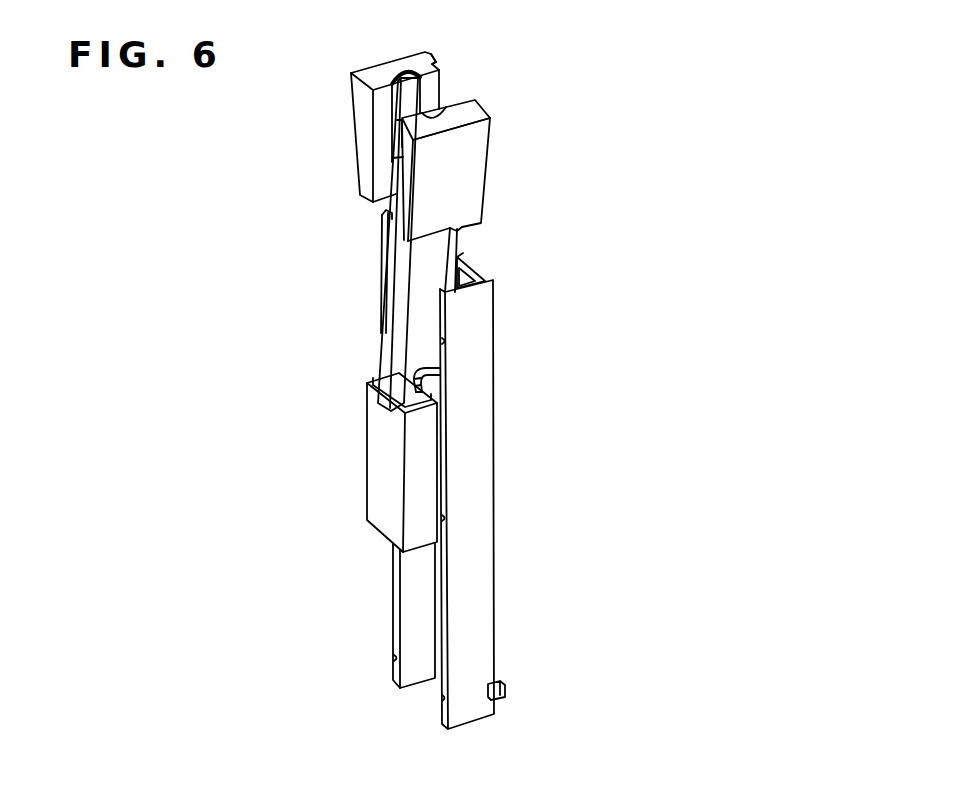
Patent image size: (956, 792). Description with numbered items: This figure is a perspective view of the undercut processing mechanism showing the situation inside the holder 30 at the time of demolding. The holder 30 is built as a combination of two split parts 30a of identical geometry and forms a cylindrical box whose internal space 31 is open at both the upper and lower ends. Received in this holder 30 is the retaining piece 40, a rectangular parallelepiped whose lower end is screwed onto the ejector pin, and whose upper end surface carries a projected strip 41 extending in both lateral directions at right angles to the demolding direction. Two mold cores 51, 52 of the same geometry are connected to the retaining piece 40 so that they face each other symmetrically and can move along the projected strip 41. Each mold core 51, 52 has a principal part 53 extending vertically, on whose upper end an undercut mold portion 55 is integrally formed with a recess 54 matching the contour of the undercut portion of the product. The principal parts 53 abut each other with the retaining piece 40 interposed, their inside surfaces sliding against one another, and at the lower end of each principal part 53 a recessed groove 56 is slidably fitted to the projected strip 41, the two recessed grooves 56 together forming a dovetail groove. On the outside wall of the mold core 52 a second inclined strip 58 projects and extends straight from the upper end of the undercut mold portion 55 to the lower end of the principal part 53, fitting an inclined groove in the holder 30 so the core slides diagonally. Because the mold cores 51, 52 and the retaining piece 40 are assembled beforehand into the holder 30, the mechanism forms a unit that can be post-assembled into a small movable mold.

The holder 30 is at (496, 342).
The split part 30a is at (531, 491).
The internal space 31 is at (416, 672).
The retaining piece 40 is at (357, 462).
The projected strip 41 is at (417, 373).
The mold core 51 is at (427, 223).
The mold core 52 is at (417, 223).
The principal part 53 is at (382, 243).
The recess 54 is at (388, 75).
The undercut mold portion 55 is at (356, 118).
The recessed groove 56 is at (378, 399).
The second inclined strip 58 is at (440, 66).